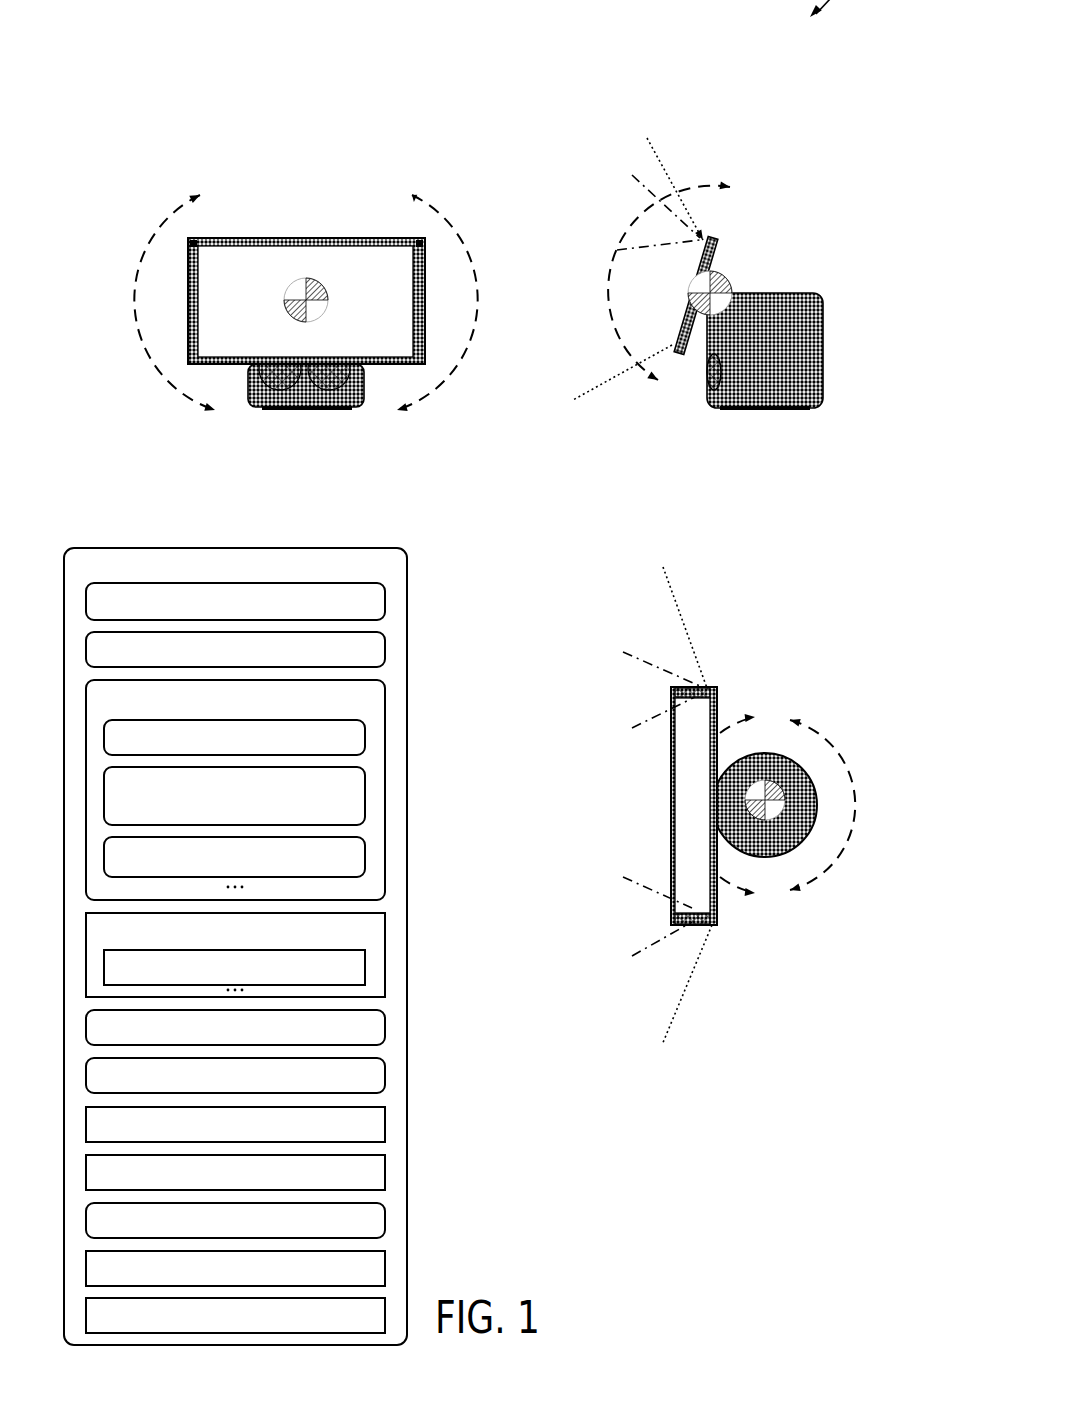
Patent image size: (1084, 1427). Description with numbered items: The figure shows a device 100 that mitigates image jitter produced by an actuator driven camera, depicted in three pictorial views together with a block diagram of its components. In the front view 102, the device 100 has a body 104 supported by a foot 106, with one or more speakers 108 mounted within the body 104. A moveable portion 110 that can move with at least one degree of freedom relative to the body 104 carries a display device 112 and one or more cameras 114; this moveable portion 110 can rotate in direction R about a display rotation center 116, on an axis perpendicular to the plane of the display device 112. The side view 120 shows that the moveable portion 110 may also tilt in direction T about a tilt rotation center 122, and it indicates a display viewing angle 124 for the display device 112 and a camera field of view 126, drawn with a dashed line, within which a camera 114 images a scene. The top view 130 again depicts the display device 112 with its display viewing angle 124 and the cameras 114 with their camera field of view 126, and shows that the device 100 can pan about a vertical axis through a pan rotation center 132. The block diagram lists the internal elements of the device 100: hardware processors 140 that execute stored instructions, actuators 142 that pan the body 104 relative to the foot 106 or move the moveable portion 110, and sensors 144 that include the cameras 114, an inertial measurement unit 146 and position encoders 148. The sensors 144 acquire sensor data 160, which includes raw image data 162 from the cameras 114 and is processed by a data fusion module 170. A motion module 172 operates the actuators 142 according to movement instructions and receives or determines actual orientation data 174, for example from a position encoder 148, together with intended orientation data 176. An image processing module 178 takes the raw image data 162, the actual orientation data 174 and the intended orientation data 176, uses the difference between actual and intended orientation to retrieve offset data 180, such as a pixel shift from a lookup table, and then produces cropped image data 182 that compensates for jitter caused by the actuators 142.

The device 100 is at (235, 946).
The front view 102 is at (471, 509).
The body 104 is at (842, 238).
The foot 106 is at (325, 410).
The speakers 108 is at (276, 390).
The moveable portion 110 is at (307, 238).
The display device 112 is at (291, 258).
The camera 114 is at (193, 242).
The display rotation center 116 is at (305, 302).
The side view 120 is at (741, 198).
The tilt rotation center 122 is at (716, 272).
The display viewing angle 124 is at (589, 568).
The camera field of view 126 is at (563, 549).
The top view 130 is at (693, 859).
The pan rotation center 132 is at (765, 805).
The hardware processors 140 is at (235, 601).
The actuators 142 is at (235, 649).
The sensors 144 is at (235, 790).
The inertial measurement unit 146 is at (234, 796).
The position encoder 148 is at (234, 857).
The sensor data 160 is at (235, 955).
The raw image data 162 is at (234, 967).
The data fusion module 170 is at (235, 1027).
The motion module 172 is at (235, 1075).
The actual orientation data 174 is at (235, 1124).
The intended orientation data 176 is at (235, 1172).
The image processing module 178 is at (235, 1220).
The offset data 180 is at (235, 1268).
The cropped image data 182 is at (235, 1315).